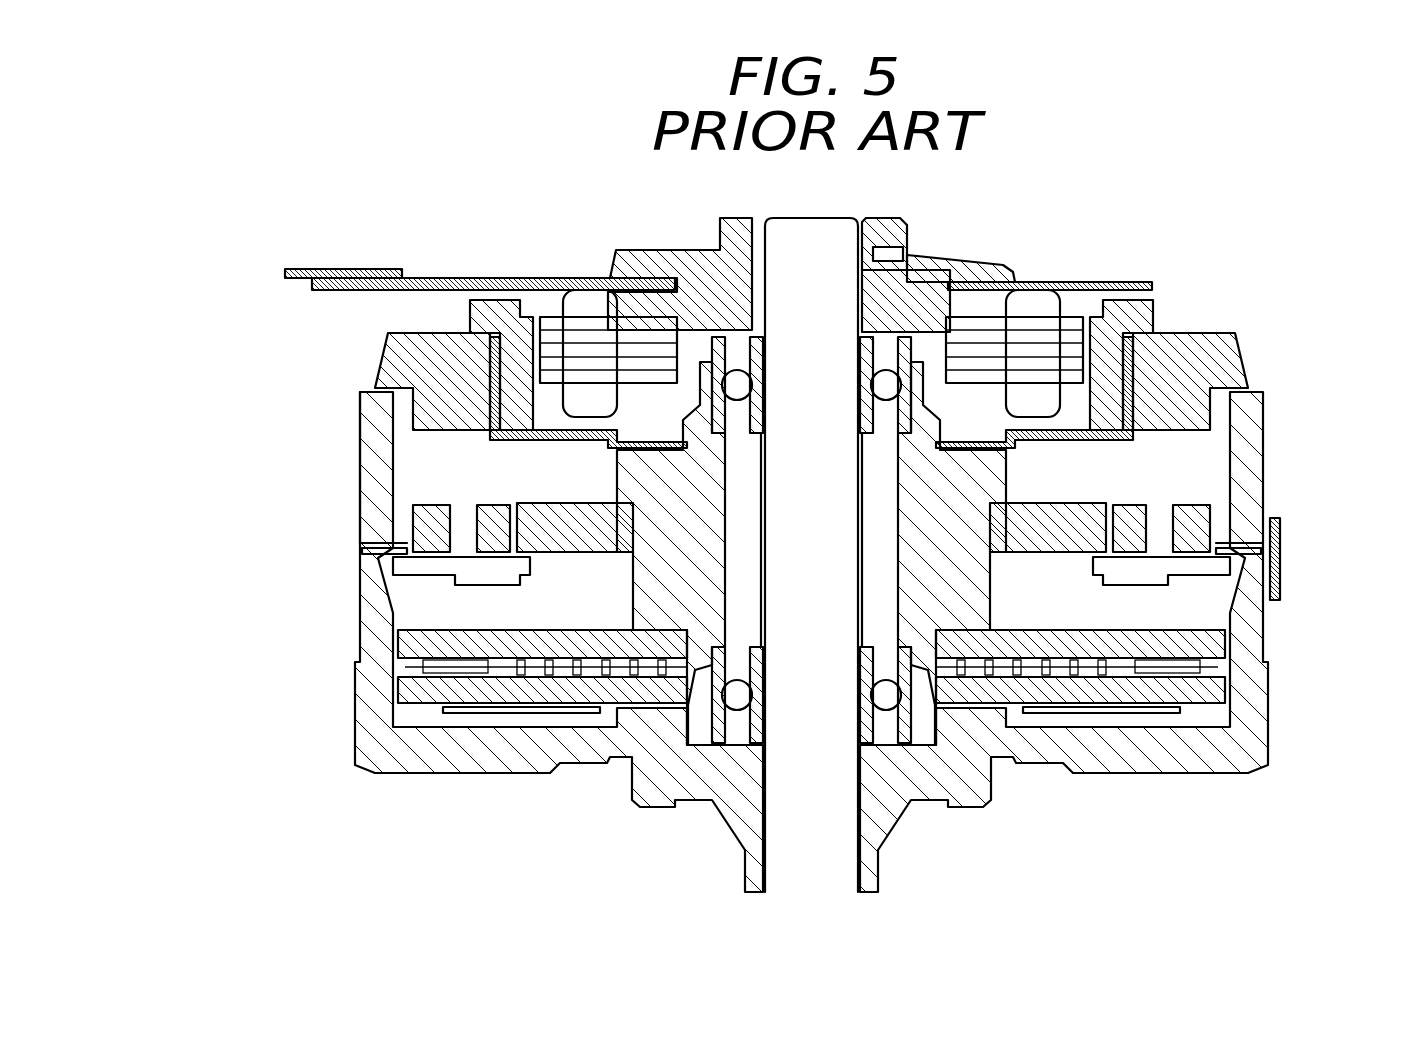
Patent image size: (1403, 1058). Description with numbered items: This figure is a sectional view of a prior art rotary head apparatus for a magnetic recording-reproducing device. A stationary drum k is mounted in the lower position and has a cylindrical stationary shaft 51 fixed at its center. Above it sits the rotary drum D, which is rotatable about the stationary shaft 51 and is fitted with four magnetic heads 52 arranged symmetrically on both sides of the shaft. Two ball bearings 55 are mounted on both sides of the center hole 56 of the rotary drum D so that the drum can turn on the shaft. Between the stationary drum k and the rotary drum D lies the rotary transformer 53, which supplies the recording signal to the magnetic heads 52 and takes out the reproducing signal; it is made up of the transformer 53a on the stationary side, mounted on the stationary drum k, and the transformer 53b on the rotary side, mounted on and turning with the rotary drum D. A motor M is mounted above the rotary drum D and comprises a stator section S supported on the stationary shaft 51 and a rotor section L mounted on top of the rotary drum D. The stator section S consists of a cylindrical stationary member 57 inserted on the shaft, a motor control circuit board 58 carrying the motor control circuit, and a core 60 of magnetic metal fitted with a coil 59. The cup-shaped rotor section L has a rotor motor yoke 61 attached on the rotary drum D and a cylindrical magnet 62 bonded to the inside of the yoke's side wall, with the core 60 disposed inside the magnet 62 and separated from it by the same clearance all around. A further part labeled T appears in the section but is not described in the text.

The stationary shaft 51 is at (797, 893).
The magnetic heads 52 is at (397, 568).
The rotary transformer 53 is at (408, 716).
The transformer on the stationary side 53a is at (403, 693).
The transformer on the rotary side 53b is at (407, 642).
The ball bearings 55 is at (758, 393).
The center hole 56 is at (762, 487).
The cylindrical stationary member 57 is at (925, 262).
The motor control circuit board 58 is at (480, 280).
The coil 59 is at (1033, 300).
The core 60 is at (1067, 322).
The rotor motor yoke 61 is at (1127, 440).
The cylindrical magnet 62 is at (1150, 312).
The motor M is at (366, 222).
The stator section S is at (1019, 253).
The rotor section L is at (1254, 352).
The rotary drum D is at (310, 434).
The terminal plate T is at (1280, 590).
The stationary drum k is at (380, 788).